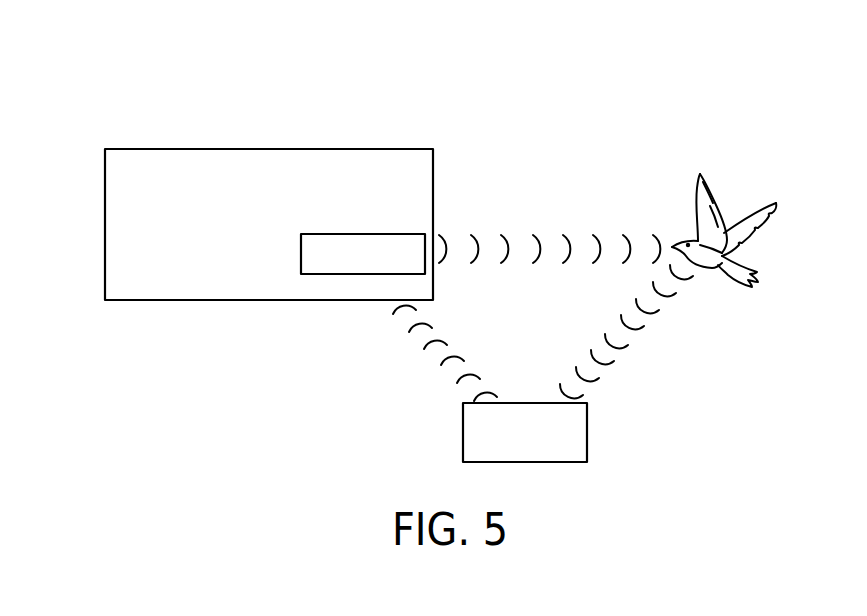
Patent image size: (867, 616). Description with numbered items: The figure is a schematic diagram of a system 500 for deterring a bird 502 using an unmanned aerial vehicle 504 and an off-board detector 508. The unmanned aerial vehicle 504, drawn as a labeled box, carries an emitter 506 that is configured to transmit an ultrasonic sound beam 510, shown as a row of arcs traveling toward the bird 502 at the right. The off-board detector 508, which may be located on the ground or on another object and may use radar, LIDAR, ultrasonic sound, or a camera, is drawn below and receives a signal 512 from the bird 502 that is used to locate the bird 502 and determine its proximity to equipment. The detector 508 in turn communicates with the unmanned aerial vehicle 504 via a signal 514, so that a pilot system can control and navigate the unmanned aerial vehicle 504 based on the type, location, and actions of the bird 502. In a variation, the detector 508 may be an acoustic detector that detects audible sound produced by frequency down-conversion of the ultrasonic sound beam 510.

The system 500 is at (381, 94).
The bird 502 is at (747, 210).
The unmanned aerial vehicle 504 is at (105, 232).
The emitter 506 is at (301, 249).
The off-board detector 508 is at (463, 418).
The ultrasonic sound beam 510 is at (540, 235).
The signal 512 is at (638, 330).
The signal 514 is at (458, 352).